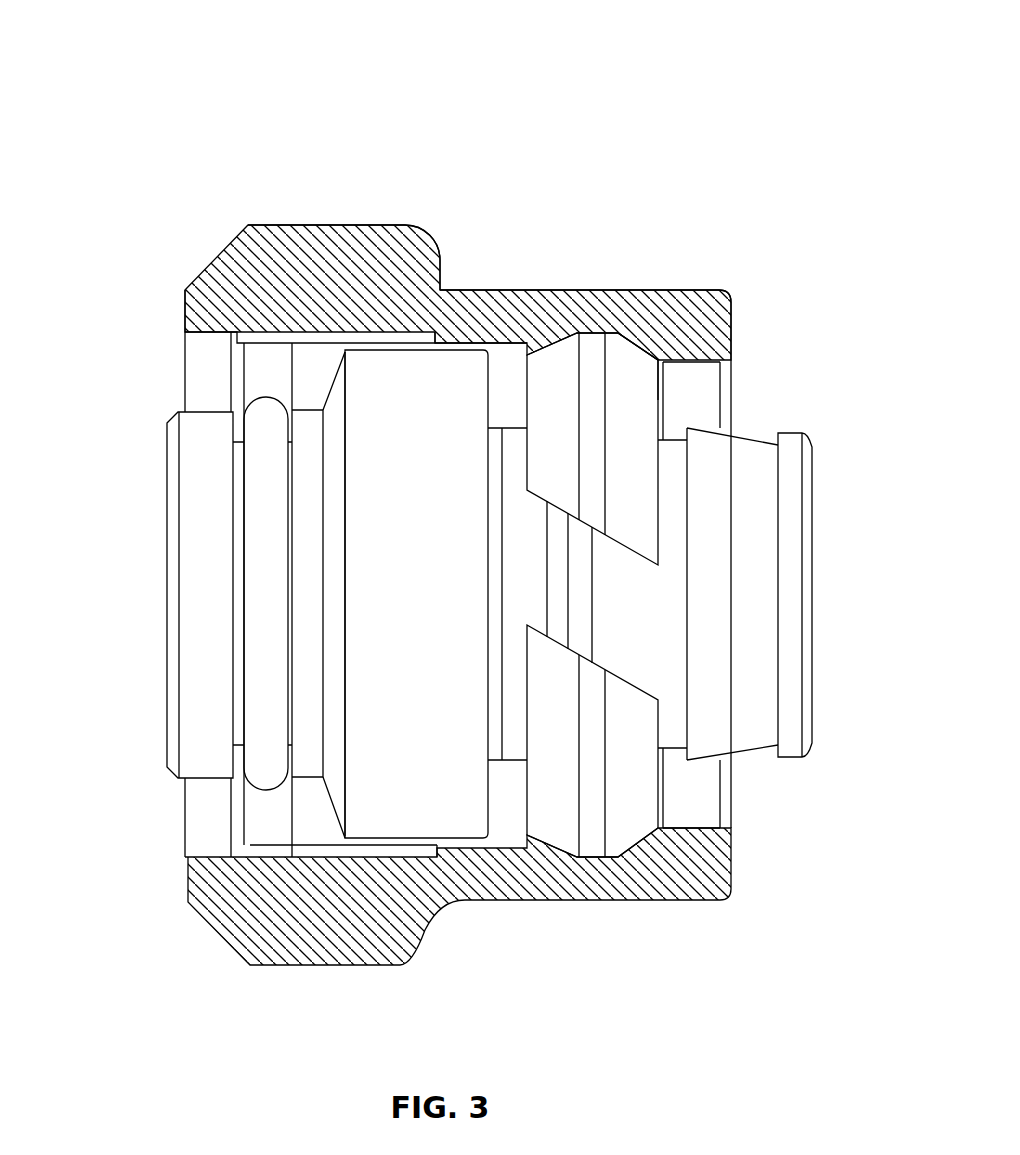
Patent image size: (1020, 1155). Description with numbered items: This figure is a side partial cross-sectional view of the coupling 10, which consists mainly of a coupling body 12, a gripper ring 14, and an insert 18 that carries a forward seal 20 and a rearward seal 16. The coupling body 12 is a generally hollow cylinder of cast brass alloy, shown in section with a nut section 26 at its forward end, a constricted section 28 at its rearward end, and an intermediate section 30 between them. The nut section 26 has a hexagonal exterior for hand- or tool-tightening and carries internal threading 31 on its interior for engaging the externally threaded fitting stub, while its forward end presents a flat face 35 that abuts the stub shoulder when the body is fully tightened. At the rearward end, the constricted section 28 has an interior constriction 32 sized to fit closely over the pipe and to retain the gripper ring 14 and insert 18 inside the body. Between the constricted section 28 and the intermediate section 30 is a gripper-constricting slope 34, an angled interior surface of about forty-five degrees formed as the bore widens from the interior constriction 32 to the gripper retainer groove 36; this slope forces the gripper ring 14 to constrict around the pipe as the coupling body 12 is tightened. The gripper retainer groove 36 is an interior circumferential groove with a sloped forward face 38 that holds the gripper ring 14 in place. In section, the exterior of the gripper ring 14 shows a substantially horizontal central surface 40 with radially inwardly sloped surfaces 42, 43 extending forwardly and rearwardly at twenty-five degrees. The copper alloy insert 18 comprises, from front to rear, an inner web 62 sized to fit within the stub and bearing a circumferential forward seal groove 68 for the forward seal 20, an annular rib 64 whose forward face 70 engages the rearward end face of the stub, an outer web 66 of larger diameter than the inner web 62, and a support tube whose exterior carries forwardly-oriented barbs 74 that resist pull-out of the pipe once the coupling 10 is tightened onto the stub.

The coupling 10 is at (716, 66).
The coupling body 12 is at (238, 277).
The gripper ring 14 is at (696, 559).
The rearward seal 16 is at (583, 583).
The insert 18 is at (314, 484).
The forward seal 20 is at (266, 418).
The nut section 26 is at (347, 275).
The constricted section 28 is at (662, 360).
The intermediate section 30 is at (486, 318).
The internal threading 31 is at (418, 330).
The interior constriction 32 is at (698, 350).
The gripper-constricting slope 34 is at (680, 317).
The flat face 35 is at (186, 320).
The gripper retainer groove 36 is at (638, 343).
The sloped forward face 38 is at (558, 332).
The horizontal central surface 40 is at (590, 340).
The forward sloped surface 42 is at (611, 520).
The rearward sloped surface 43 is at (650, 355).
The inner web 62 is at (200, 440).
The annular rib 64 is at (348, 425).
The outer web 66 is at (397, 405).
The forward seal groove 68 is at (294, 440).
The forward face 70 is at (335, 453).
The barbs 74 is at (749, 559).